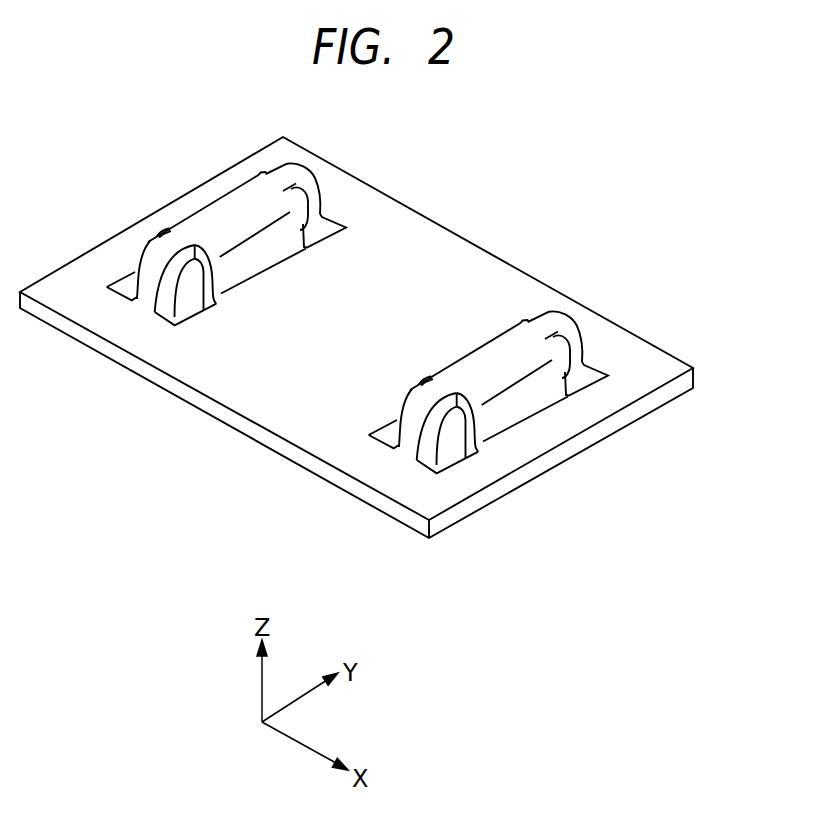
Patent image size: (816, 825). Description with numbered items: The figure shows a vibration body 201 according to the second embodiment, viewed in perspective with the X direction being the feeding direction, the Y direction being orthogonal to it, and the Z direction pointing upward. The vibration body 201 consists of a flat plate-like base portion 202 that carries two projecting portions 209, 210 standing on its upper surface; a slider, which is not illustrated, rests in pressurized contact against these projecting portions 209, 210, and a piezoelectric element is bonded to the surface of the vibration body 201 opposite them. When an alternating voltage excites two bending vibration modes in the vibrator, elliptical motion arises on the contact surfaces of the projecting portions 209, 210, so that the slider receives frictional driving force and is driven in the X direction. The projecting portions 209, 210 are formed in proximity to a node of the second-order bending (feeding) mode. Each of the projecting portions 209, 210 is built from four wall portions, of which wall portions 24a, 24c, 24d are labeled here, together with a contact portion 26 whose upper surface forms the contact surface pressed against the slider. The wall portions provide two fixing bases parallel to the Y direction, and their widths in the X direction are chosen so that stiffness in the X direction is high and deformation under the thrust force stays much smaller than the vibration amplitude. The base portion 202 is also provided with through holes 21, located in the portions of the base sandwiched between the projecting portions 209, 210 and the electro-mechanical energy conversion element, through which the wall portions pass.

The vibration body 201 is at (543, 217).
The base portion 202 is at (278, 398).
The projecting portion 209 is at (213, 205).
The projecting portion 210 is at (558, 437).
The through hole 21 is at (448, 450).
The wall portion 24a is at (411, 421).
The wall portion 24c is at (560, 394).
The wall portion 24d is at (419, 380).
The contact portion 26 is at (492, 365).